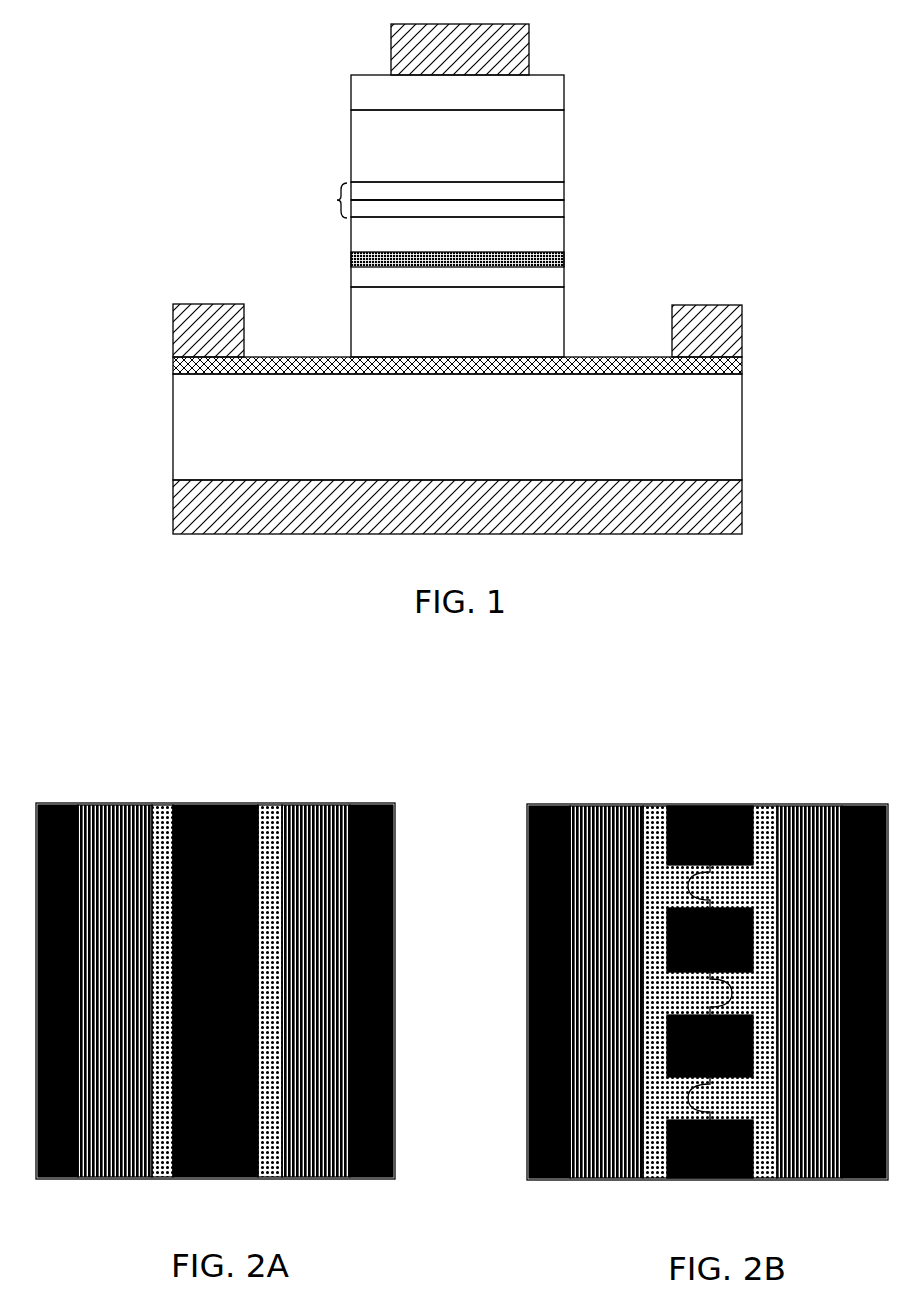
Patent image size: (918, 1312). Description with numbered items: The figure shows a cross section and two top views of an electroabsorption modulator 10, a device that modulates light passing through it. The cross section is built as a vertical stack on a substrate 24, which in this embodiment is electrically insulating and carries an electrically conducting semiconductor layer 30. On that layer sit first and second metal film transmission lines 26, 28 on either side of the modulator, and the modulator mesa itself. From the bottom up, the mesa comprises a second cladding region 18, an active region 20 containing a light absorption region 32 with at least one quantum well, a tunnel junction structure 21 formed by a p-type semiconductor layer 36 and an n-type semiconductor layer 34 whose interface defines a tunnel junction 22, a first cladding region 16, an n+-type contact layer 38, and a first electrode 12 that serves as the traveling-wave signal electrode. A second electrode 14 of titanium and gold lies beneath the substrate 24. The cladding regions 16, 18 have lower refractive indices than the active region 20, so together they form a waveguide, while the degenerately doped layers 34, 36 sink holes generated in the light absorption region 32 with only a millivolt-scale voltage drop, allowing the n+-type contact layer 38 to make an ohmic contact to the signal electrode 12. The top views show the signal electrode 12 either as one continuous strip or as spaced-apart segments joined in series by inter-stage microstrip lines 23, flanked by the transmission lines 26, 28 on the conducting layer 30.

In FIG. 1, the electroabsorption modulator 10 is at (744, 126).
In FIG. 2A, the electroabsorption modulator 10 is at (177, 759).
In FIG. 2B, the electroabsorption modulator 10 is at (674, 758).
In FIG. 1, the first electrode 12 is at (391, 49).
In FIG. 2A, the first electrode 12 is at (218, 800).
In FIG. 2B, the first electrode 12 is at (709, 803).
In FIG. 1, the second electrode 14 is at (742, 505).
In FIG. 1, the first cladding region 16 is at (351, 145).
In FIG. 1, the second cladding region 18 is at (351, 324).
In FIG. 1, the active region 20 is at (351, 253).
In FIG. 1, the tunnel junction structure 21 is at (336, 205).
In FIG. 1, the tunnel junction 22 is at (566, 200).
In FIG. 2B, the inter-stage microstrip line 23 is at (686, 890).
In FIG. 1, the substrate 24 is at (742, 418).
In FIG. 1, the first metal film transmission line 26 is at (173, 318).
In FIG. 2A, the first metal film transmission line 26 is at (60, 800).
In FIG. 2B, the first metal film transmission line 26 is at (550, 802).
In FIG. 1, the second metal film transmission line 28 is at (742, 317).
In FIG. 2A, the second metal film transmission line 28 is at (367, 800).
In FIG. 2B, the second metal film transmission line 28 is at (866, 802).
In FIG. 1, the electrically conducting semiconductor layer 30 is at (173, 365).
In FIG. 2A, the electrically conducting semiconductor layer 30 is at (316, 1181).
In FIG. 2B, the electrically conducting semiconductor layer 30 is at (600, 1182).
In FIG. 1, the light absorption region 32 is at (564, 258).
In FIG. 1, the n-type semiconductor layer 34 is at (564, 188).
In FIG. 1, the p-type semiconductor layer 36 is at (564, 210).
In FIG. 1, the n+-type contact layer 38 is at (351, 92).
In FIG. 2A, the n+-type contact layer 38 is at (277, 800).
In FIG. 2B, the n+-type contact layer 38 is at (658, 800).